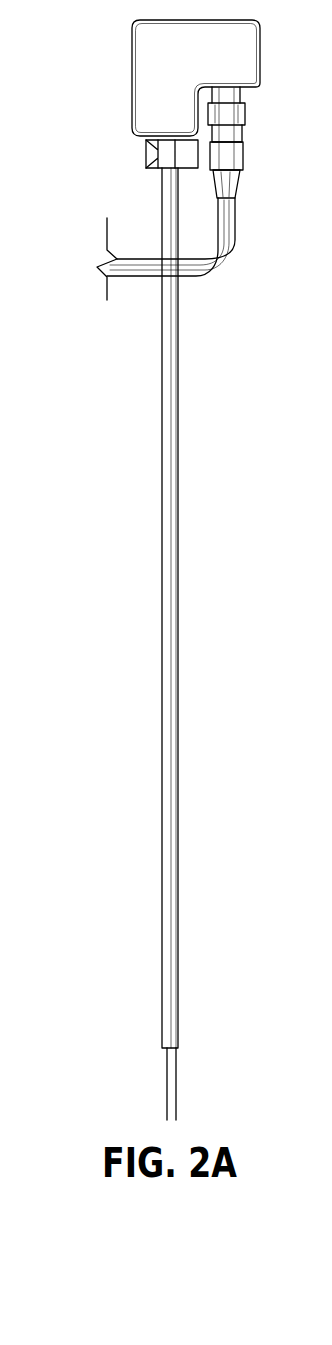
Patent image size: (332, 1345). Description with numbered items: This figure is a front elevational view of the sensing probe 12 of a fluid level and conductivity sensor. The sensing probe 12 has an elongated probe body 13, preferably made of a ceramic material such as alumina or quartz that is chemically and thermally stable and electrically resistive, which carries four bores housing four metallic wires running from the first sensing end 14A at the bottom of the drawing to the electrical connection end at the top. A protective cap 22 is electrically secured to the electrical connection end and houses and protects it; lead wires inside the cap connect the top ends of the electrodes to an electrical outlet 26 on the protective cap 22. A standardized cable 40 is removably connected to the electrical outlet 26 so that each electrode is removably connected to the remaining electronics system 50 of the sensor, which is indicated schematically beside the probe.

The protective cap 22 is at (130, 77).
The electrical outlet 26 is at (242, 90).
The cable 40 is at (243, 150).
The electronics system 50 is at (107, 233).
The sensing probe 12 is at (116, 608).
The probe body 13 is at (161, 420).
The first sensing end 14A is at (163, 1047).